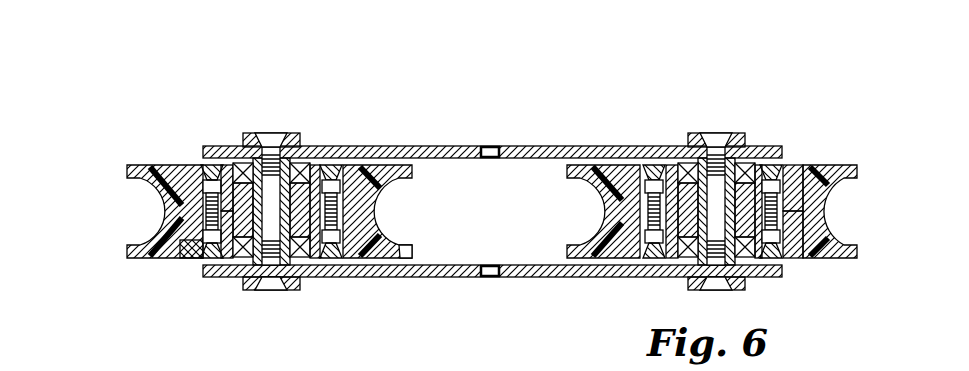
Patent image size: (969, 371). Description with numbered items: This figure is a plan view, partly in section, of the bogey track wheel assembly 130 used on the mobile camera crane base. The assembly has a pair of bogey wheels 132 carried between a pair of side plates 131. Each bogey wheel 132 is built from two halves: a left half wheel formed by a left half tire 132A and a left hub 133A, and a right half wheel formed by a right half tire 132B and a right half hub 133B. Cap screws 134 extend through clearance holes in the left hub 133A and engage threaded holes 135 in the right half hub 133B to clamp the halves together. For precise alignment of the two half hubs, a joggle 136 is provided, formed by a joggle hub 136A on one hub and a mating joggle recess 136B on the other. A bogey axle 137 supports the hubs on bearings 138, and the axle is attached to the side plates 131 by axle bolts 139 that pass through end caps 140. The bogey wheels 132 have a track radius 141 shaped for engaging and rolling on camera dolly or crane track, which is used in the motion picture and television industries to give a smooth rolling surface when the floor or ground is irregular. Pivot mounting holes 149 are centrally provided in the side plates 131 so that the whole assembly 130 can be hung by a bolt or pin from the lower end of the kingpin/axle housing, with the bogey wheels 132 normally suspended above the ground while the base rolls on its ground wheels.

The bogey track wheel assembly 130 is at (599, 104).
The side plates 131 is at (664, 152).
The bogey wheels 132 is at (139, 188).
The left half tire 132A is at (199, 187).
The right half tire 132B is at (133, 258).
The left hub 133A is at (800, 164).
The right half hub 133B is at (803, 259).
The cap screws 134 is at (205, 172).
The threaded holes 135 is at (187, 259).
The joggle 136 is at (344, 166).
The joggle hub 136A is at (222, 165).
The joggle recess 136B is at (216, 268).
The bogey axle 137 is at (316, 164).
The bearings 138 is at (290, 133).
The axle bolts 139 is at (278, 292).
The end caps 140 is at (257, 291).
The track radius 141 is at (406, 231).
The pivot mounting holes 149 is at (491, 142).